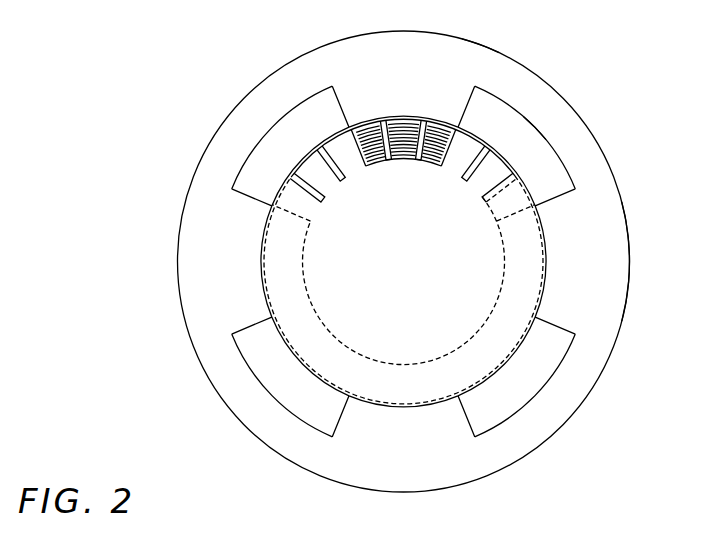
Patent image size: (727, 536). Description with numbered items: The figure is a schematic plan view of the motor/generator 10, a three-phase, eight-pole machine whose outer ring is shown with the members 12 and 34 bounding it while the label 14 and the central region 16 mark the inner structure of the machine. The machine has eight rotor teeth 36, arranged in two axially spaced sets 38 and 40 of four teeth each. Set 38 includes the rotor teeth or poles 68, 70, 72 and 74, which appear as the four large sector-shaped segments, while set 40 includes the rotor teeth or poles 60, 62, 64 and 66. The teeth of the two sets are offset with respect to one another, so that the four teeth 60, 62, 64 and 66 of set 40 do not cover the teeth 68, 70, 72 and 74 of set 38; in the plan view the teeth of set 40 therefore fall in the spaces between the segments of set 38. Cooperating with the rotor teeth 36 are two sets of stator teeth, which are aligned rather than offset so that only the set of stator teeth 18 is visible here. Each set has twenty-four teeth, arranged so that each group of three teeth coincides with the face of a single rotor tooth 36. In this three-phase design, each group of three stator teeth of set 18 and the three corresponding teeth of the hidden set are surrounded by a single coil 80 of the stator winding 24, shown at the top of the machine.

The motor/generator 10 is at (600, 438).
The outer housing shell 12 is at (628, 258).
The inner sleeve 14 is at (266, 234).
The rotor bore 16 is at (392, 256).
The set of stator teeth 18 is at (337, 186).
The stator winding 24 is at (409, 117).
The outer surface 34 is at (622, 308).
The rotor teeth 36 is at (592, 222).
The set of rotor teeth 38 is at (473, 77).
The set of rotor teeth 40 is at (541, 129).
The rotor tooth 60 is at (381, 105).
The rotor tooth 62 is at (553, 265).
The rotor tooth 64 is at (391, 432).
The rotor tooth 66 is at (225, 268).
The rotor tooth 68 is at (510, 155).
The rotor tooth 70 is at (511, 380).
The rotor tooth 72 is at (265, 377).
The rotor tooth 74 is at (275, 153).
The coil 80 is at (419, 120).